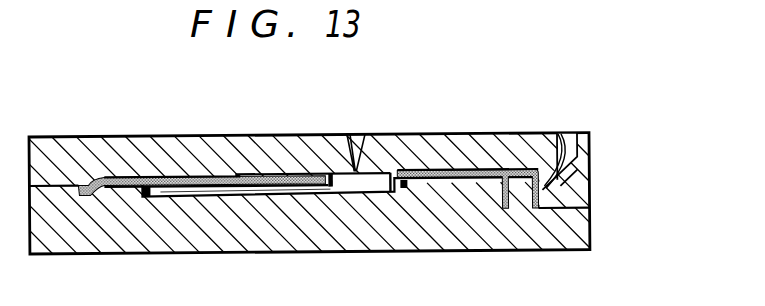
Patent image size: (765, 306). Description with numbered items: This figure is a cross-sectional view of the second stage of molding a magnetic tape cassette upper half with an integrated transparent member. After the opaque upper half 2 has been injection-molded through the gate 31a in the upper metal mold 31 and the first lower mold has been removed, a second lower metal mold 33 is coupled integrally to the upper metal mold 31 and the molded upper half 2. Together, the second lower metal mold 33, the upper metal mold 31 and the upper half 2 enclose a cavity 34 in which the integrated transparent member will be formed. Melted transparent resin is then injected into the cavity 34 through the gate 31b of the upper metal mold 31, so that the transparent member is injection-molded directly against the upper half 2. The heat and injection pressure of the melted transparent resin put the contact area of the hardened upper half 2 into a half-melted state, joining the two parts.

The upper half 2 is at (452, 173).
The upper metal mold 31 is at (591, 190).
The gate 31a is at (557, 138).
The gate 31b is at (352, 138).
The second lower metal mold 33 is at (591, 233).
The cavity 34 is at (331, 176).